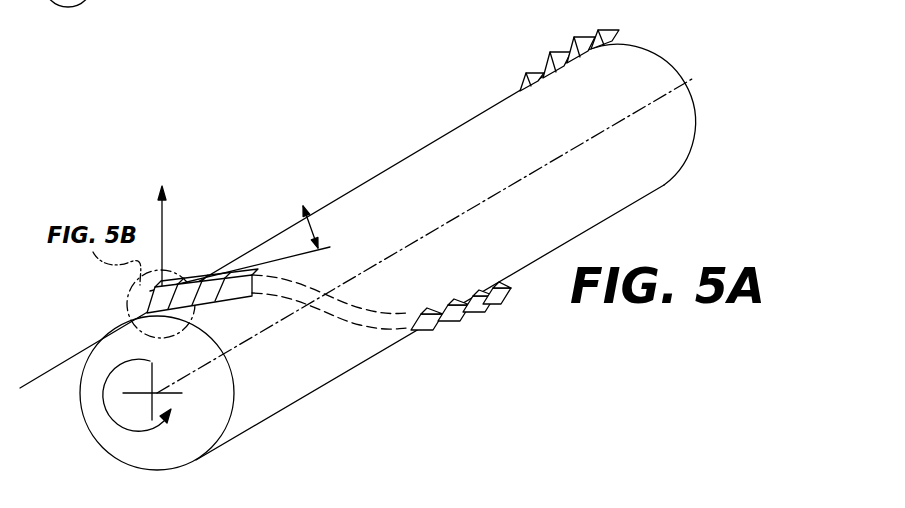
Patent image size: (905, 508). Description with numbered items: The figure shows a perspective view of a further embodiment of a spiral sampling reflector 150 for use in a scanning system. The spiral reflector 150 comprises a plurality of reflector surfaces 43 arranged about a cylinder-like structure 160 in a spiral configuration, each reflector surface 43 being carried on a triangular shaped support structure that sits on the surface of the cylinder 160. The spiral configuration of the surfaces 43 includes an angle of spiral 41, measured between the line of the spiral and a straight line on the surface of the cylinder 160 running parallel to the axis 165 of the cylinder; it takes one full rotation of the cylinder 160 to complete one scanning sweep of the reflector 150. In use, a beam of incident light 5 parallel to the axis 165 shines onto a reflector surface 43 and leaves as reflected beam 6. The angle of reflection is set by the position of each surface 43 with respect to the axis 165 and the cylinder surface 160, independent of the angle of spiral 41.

The incident light beam 5 is at (68, 357).
The reflected beam 6 is at (163, 232).
The angle of spiral 41 is at (312, 220).
The reflector surface 43 is at (444, 497).
The spiral reflector 150 is at (485, 86).
The cylinder-like structure 160 is at (398, 162).
The axis 165 is at (697, 78).